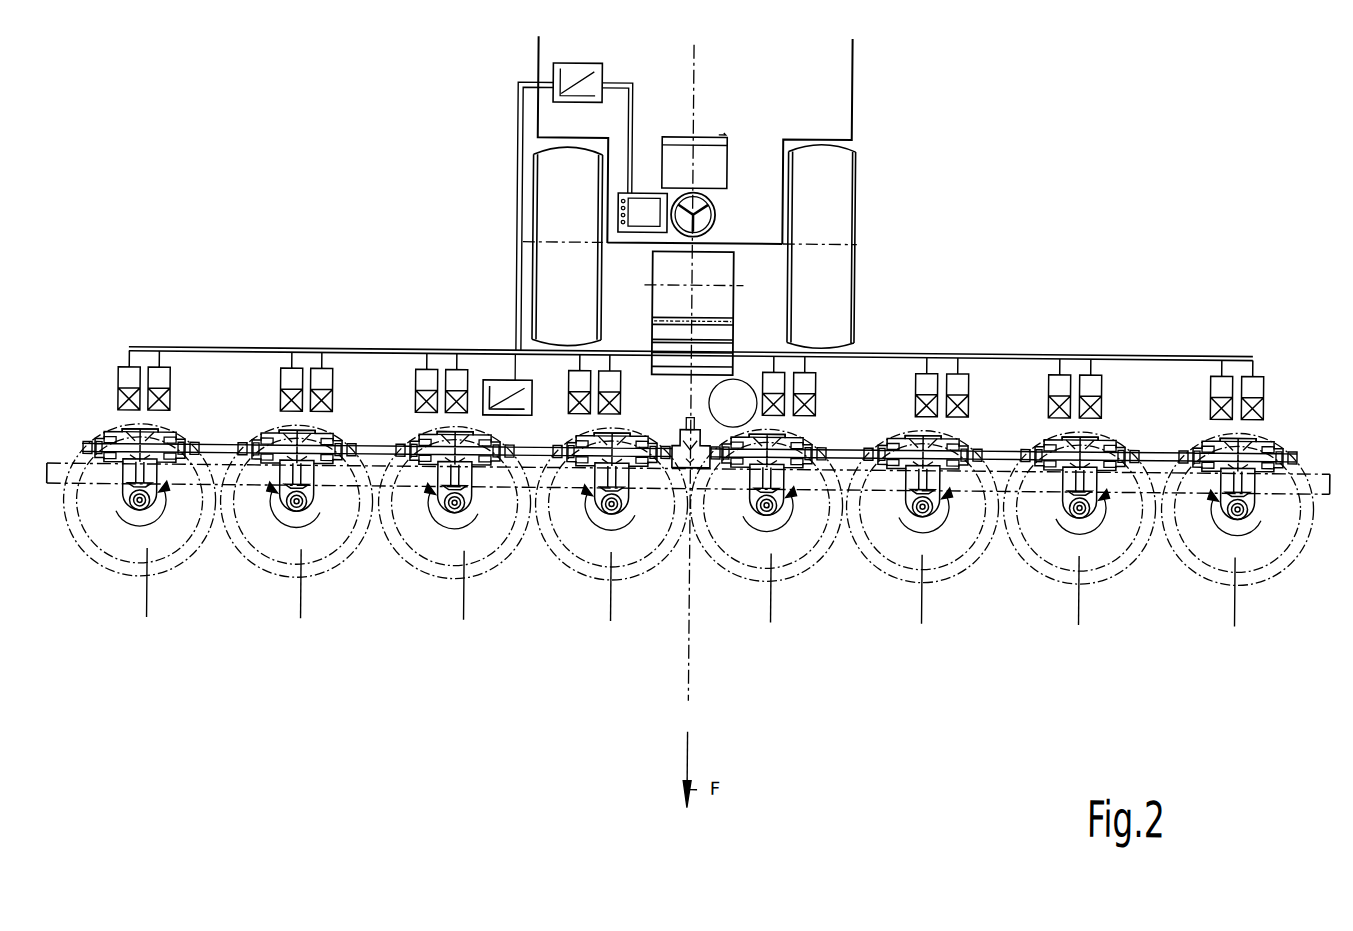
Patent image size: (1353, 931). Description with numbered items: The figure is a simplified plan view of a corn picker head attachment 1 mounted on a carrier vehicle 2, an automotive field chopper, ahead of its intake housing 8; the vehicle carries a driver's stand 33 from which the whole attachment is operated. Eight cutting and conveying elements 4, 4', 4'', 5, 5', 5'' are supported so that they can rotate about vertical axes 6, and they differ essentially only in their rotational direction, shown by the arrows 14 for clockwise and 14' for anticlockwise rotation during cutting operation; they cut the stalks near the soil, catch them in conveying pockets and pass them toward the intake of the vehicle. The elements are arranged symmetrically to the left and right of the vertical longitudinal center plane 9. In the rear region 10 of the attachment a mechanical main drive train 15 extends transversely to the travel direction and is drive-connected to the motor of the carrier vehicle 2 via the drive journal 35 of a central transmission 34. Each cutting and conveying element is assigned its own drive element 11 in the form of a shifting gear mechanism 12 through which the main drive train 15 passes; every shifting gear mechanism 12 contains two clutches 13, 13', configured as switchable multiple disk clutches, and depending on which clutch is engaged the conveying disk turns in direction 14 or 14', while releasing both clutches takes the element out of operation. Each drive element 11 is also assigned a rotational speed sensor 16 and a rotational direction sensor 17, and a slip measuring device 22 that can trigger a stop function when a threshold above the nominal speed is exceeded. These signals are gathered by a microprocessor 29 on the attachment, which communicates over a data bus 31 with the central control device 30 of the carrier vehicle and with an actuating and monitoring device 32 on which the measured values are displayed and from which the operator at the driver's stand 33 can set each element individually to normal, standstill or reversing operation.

The attachment 1 is at (1125, 192).
The carrier vehicle 2 is at (828, 212).
The cutting and conveying element 4 is at (771, 605).
The cutting and conveying element 4' is at (534, 606).
The cutting and conveying element 4'' is at (1079, 606).
The cutting and conveying element 5 is at (611, 604).
The cutting and conveying element 5' is at (849, 607).
The cutting and conveying element 5'' is at (302, 603).
The vertical axes 6 is at (129, 524).
The intake housing 8 is at (708, 269).
The vertical longitudinal center plane 9 is at (696, 87).
The rear region 10 is at (248, 284).
The drive element 11 is at (128, 432).
The shifting gear mechanism 12 is at (703, 407).
The clutch 13 is at (689, 440).
The clutch 13' is at (684, 421).
The rotational direction in the clockwise direction 14 is at (751, 512).
The rotational direction in the anticlockwise direction 14' is at (626, 508).
The main drive train 15 is at (218, 437).
The rotational speed sensor 16 is at (126, 377).
The rotational direction sensor 17 is at (162, 377).
The slip measuring device 22 is at (503, 359).
The microprocessor 29 is at (496, 387).
The central control device of the carrier vehicle 30 is at (575, 70).
The data bus 31 is at (629, 128).
The actuating and monitoring device 32 is at (641, 218).
The driver's stand 33 is at (742, 144).
The central transmission 34 is at (685, 466).
The drive journal 35 is at (692, 424).